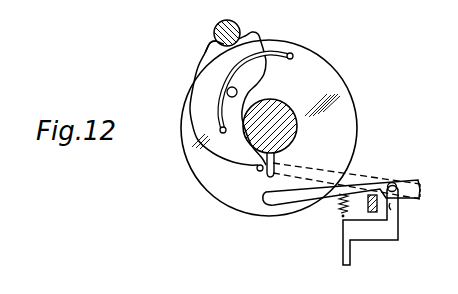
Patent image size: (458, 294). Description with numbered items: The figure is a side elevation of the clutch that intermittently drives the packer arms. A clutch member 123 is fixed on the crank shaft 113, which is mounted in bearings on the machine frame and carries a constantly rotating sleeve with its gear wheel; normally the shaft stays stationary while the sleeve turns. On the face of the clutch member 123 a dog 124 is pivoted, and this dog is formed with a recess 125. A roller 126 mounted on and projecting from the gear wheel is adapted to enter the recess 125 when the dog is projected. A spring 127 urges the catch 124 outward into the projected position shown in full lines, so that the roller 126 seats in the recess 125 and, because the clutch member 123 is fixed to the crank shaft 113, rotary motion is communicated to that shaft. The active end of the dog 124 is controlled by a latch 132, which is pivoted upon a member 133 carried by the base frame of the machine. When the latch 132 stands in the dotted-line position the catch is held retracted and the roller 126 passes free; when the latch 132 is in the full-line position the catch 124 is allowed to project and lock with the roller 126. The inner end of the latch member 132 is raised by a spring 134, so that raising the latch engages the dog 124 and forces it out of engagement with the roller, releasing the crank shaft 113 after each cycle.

The crank shaft 113 is at (283, 110).
The clutch member 123 is at (357, 124).
The dog 124 is at (205, 67).
The recess 125 is at (205, 50).
The roller 126 is at (240, 29).
The spring 127 is at (218, 102).
The latch 132 is at (371, 190).
The member 133 is at (399, 236).
The spring 134 is at (335, 207).